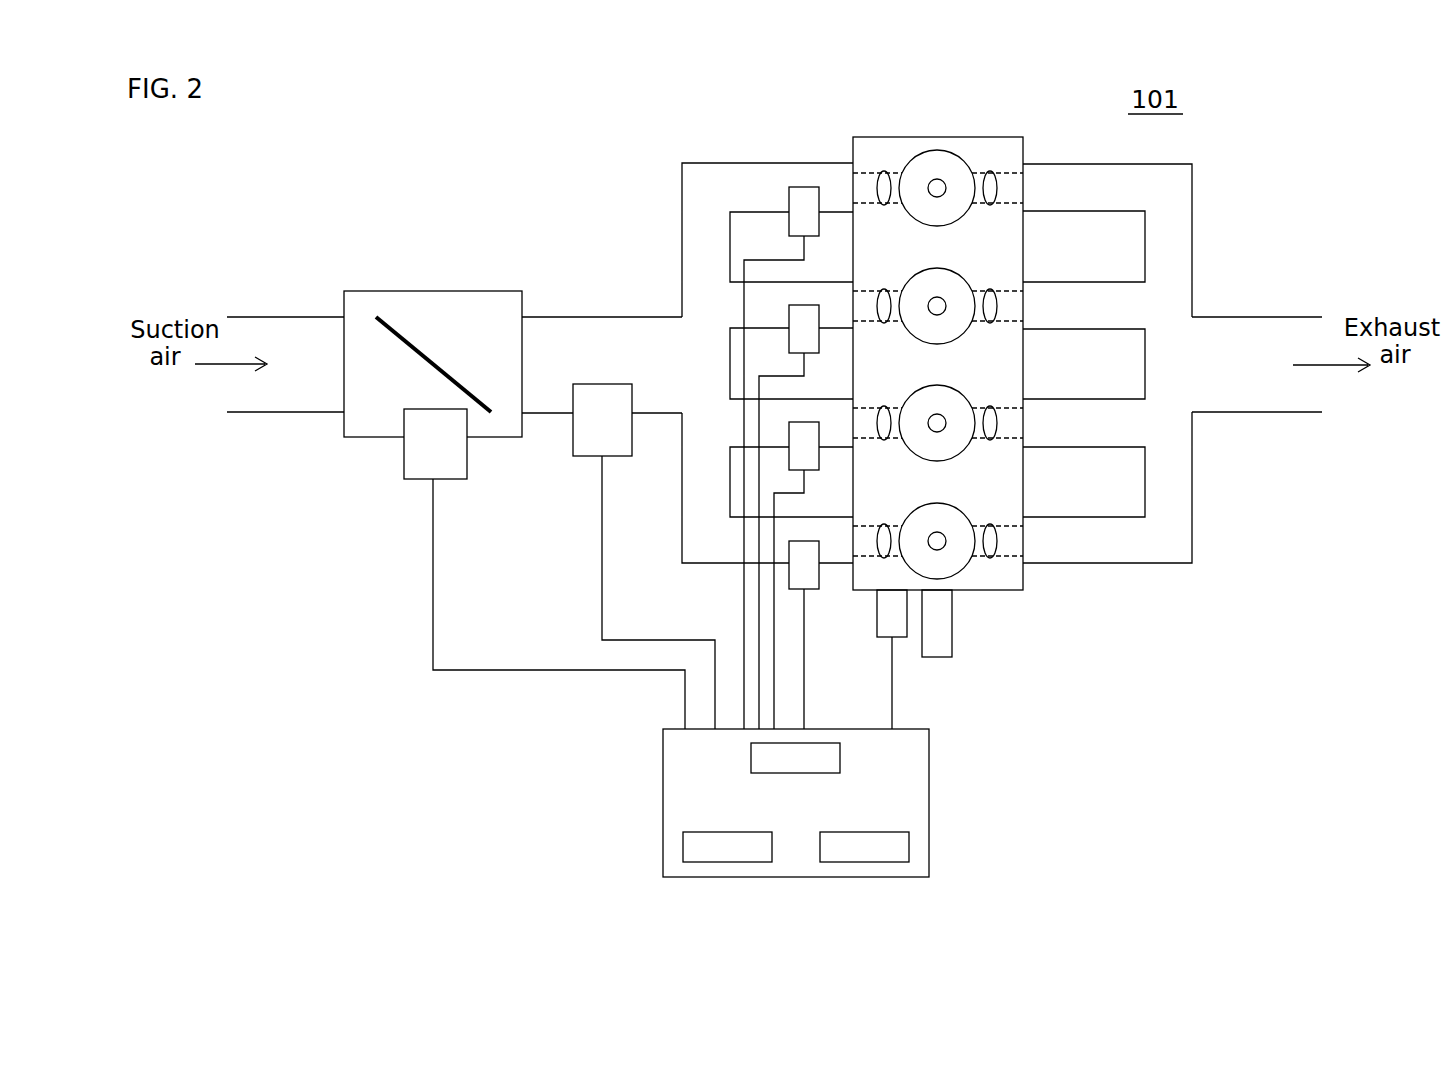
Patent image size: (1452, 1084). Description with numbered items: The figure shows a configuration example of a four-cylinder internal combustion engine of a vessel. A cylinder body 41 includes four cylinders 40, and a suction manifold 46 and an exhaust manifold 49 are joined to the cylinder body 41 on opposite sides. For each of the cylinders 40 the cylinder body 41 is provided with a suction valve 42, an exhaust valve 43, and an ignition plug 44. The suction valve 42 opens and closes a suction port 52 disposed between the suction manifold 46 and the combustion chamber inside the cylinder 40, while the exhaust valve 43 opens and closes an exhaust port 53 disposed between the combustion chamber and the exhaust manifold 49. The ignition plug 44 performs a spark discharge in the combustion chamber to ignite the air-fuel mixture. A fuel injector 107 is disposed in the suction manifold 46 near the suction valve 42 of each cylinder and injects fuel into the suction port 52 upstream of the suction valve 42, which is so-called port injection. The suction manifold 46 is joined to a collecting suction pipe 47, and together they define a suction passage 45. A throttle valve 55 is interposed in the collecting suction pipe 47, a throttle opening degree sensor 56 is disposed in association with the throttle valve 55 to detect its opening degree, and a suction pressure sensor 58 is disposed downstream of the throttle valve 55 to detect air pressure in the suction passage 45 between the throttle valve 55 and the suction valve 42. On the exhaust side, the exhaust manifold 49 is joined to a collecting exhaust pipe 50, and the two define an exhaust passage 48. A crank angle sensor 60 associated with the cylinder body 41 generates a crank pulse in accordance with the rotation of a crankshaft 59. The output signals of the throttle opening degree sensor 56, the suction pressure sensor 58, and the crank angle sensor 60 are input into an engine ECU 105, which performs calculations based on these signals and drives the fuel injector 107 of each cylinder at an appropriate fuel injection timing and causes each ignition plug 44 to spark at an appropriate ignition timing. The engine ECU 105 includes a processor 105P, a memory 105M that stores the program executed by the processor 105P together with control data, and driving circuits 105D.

The cylinder body 41 is at (897, 147).
The cylinder 40 is at (958, 166).
The suction valve 42 is at (884, 205).
The exhaust valve 43 is at (990, 205).
The ignition plug 44 is at (942, 195).
The suction passage 45 is at (687, 363).
The suction manifold 46 is at (610, 290).
The collecting suction pipe 47 is at (637, 322).
The exhaust passage 48 is at (1180, 363).
The exhaust manifold 49 is at (1182, 505).
The collecting exhaust pipe 50 is at (1257, 413).
The suction port 52 is at (853, 182).
The exhaust port 53 is at (1015, 188).
The throttle valve 55 is at (422, 340).
The throttle opening degree sensor 56 is at (404, 470).
The suction pressure sensor 58 is at (573, 450).
The crankshaft 59 is at (952, 647).
The crank angle sensor 60 is at (897, 637).
The engine ECU 105 is at (806, 829).
The driving circuits 105D is at (840, 758).
The processor 105P is at (727, 862).
The memory 105M is at (865, 862).
The fuel injector 107 is at (789, 196).